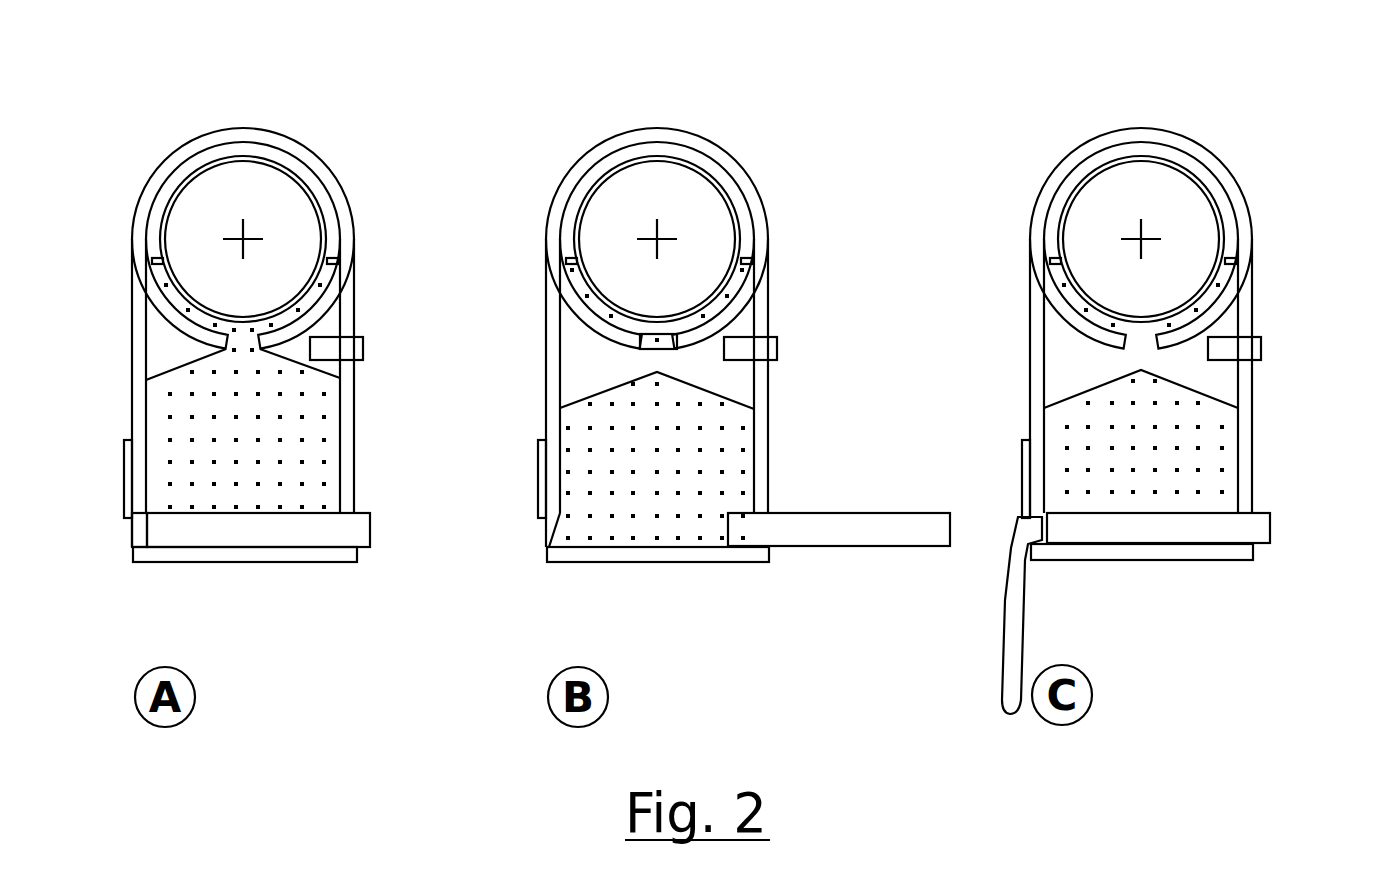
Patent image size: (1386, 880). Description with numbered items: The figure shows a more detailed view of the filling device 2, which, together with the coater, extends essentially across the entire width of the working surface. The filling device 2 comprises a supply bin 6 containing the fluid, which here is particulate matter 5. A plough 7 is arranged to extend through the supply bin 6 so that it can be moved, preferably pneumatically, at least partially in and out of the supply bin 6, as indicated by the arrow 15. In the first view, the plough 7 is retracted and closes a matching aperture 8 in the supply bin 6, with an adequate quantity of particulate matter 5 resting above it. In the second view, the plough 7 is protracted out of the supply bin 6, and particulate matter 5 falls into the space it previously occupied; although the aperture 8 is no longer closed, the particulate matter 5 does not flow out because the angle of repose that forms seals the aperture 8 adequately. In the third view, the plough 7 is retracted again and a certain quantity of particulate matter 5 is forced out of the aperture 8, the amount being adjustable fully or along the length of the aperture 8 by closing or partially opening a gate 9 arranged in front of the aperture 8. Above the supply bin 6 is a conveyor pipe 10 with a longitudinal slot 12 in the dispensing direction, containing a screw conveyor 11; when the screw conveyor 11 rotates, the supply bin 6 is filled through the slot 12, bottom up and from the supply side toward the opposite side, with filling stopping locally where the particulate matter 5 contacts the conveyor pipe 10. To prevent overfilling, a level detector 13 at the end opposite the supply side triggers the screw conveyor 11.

The filling device 2 is at (835, 272).
The particulate matter 5 is at (287, 393).
The supply bin 6 is at (345, 458).
The plough 7 is at (350, 526).
The aperture 8 is at (145, 528).
The gate 9 is at (130, 477).
The conveyor pipe 10 is at (350, 225).
The screw conveyor 11 is at (287, 205).
The slot 12 is at (293, 332).
The level detector 13 is at (363, 352).
The arrow 15 is at (382, 562).